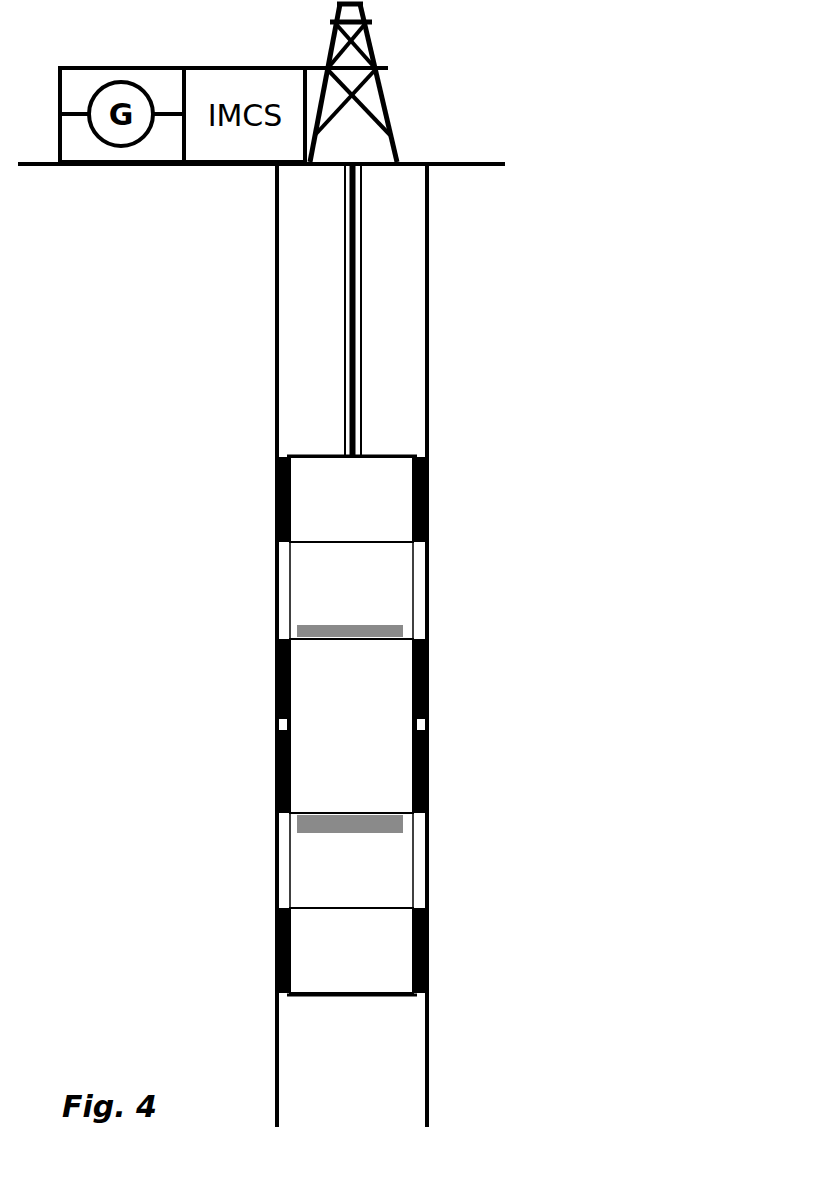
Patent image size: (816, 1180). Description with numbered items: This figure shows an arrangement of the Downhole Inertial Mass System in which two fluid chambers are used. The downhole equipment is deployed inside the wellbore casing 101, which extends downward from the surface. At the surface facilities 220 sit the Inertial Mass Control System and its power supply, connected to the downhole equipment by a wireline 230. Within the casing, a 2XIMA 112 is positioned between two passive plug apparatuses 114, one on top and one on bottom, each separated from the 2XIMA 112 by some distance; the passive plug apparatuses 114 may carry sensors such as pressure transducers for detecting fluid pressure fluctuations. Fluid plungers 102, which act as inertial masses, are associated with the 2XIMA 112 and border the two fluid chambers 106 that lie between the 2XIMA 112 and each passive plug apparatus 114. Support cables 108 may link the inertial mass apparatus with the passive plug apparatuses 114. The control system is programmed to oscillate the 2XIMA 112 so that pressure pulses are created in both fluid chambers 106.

The wellbore casing 101 is at (277, 327).
The fluid plunger 102 is at (350, 625).
The fluid chamber 106 is at (312, 585).
The support cable 108 is at (290, 858).
The 2XIMA 112 is at (352, 726).
The passive plug apparatus 114 is at (352, 725).
The surface facilities 220 is at (388, 68).
The wireline 230 is at (362, 240).